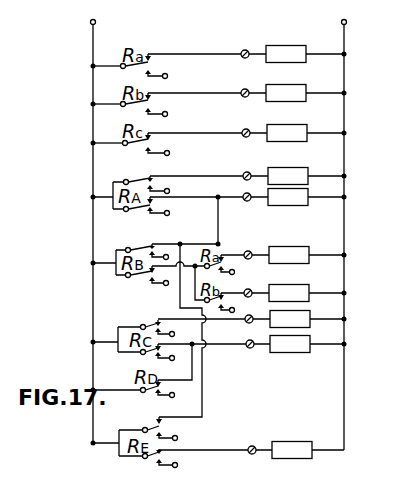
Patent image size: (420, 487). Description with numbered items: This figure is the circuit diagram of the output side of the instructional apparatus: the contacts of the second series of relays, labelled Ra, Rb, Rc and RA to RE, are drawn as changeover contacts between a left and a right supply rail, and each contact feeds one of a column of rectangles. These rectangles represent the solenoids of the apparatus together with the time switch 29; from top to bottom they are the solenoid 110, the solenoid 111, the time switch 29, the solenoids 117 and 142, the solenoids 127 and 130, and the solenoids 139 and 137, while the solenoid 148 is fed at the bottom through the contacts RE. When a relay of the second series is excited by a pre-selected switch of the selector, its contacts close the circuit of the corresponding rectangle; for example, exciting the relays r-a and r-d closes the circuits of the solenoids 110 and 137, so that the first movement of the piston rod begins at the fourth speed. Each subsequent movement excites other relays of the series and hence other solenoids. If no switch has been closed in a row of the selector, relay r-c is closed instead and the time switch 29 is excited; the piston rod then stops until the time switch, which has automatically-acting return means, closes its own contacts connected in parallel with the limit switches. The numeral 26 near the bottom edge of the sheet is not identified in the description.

The solenoid 110 is at (298, 48).
The solenoid 111 is at (298, 87).
The time switch 29 is at (300, 130).
The solenoid 117 is at (300, 173).
The solenoid 142 is at (303, 201).
The solenoid 127 is at (300, 249).
The solenoid 130 is at (303, 288).
The solenoid 139 is at (304, 317).
The solenoid 137 is at (304, 343).
The solenoid 148 is at (300, 447).
The circuit 26 is at (283, 482).